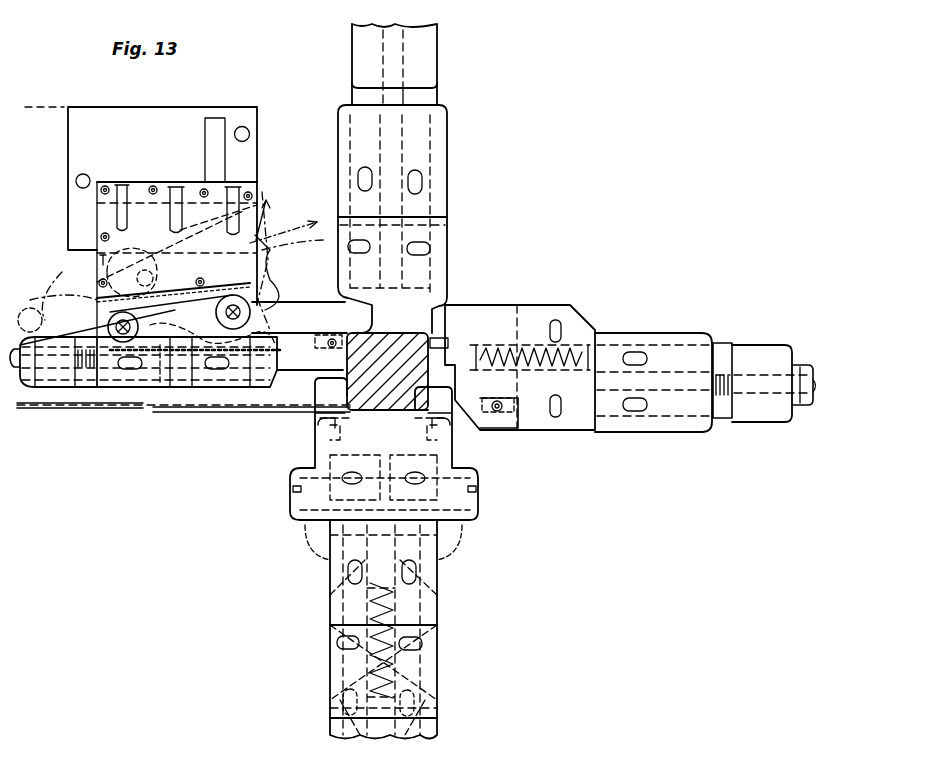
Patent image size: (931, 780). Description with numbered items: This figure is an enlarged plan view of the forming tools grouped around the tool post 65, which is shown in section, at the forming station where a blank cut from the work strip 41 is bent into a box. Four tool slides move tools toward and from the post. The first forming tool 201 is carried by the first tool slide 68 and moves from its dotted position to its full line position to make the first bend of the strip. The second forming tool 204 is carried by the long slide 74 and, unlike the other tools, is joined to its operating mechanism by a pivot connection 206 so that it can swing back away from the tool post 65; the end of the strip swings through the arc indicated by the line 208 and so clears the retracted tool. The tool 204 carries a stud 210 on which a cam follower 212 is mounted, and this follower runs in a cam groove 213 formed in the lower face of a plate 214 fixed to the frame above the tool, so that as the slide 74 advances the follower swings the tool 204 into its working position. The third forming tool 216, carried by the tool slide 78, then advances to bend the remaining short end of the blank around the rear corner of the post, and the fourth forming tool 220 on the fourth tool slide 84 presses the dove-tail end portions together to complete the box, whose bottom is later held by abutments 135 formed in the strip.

The tool slide 78 is at (442, 92).
The tool post 65 is at (410, 345).
The third forming tool 216 is at (470, 312).
The fourth forming tool 220 is at (535, 312).
The fourth tool slide 84 is at (732, 343).
The abutments 135 is at (473, 418).
The first forming tool 201 is at (328, 395).
The first tool slide 68 is at (330, 555).
The cam groove 213 is at (95, 245).
The plate 214 is at (105, 220).
The pivot connection 206 is at (123, 327).
The cam follower 212 is at (250, 312).
The second forming tool 204 is at (263, 190).
The line indicating arc 208 is at (285, 240).
The stud 210 is at (265, 332).
The tool slide 74 is at (52, 378).
The strip 41 is at (50, 410).